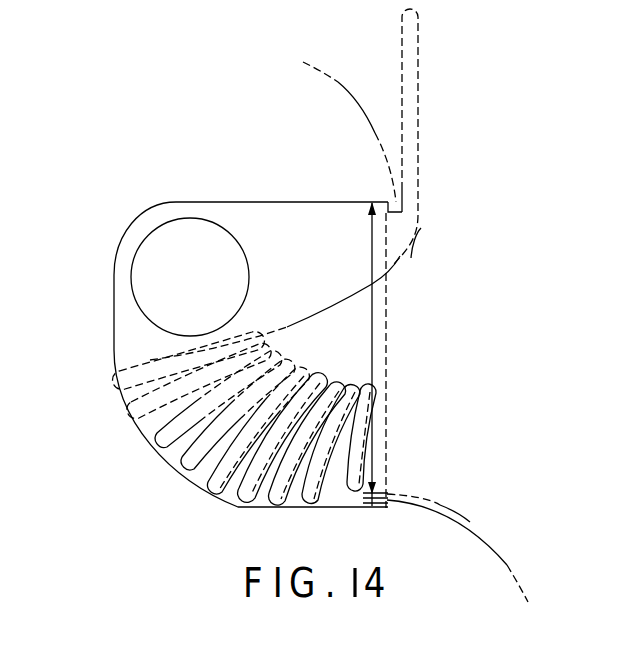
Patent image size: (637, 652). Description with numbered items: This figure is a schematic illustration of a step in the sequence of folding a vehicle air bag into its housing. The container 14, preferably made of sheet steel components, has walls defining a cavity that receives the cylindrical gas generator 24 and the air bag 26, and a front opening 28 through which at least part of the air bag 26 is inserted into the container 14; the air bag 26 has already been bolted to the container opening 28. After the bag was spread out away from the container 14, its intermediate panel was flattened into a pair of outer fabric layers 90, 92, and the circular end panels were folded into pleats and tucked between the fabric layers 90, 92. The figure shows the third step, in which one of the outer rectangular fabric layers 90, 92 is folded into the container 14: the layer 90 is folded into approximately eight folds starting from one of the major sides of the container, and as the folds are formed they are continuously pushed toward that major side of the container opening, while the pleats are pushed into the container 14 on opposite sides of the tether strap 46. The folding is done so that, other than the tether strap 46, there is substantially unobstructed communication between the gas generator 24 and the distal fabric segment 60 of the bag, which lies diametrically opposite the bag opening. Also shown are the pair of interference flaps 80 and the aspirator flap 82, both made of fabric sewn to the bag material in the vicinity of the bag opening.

The container 14 is at (122, 418).
The gas generator 24 is at (133, 300).
The air bag 26 is at (210, 453).
The front opening 28 is at (371, 258).
The tether strap 46 is at (388, 302).
The distal fabric segment 60 is at (411, 254).
The interference flaps 80 is at (363, 113).
The aspirator flap 82 is at (448, 508).
The outer fabric layer 90 is at (352, 470).
The outer fabric layer 92 is at (402, 82).